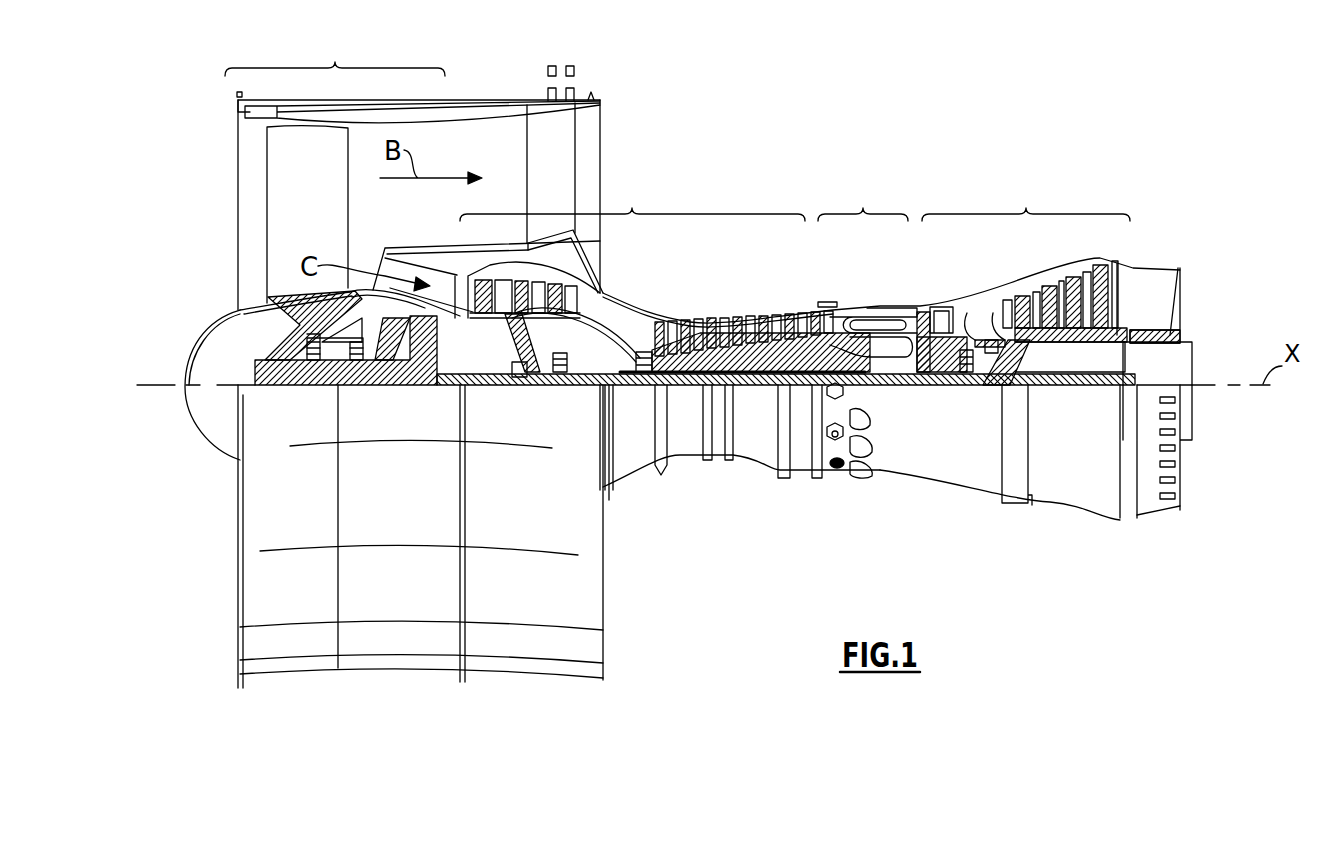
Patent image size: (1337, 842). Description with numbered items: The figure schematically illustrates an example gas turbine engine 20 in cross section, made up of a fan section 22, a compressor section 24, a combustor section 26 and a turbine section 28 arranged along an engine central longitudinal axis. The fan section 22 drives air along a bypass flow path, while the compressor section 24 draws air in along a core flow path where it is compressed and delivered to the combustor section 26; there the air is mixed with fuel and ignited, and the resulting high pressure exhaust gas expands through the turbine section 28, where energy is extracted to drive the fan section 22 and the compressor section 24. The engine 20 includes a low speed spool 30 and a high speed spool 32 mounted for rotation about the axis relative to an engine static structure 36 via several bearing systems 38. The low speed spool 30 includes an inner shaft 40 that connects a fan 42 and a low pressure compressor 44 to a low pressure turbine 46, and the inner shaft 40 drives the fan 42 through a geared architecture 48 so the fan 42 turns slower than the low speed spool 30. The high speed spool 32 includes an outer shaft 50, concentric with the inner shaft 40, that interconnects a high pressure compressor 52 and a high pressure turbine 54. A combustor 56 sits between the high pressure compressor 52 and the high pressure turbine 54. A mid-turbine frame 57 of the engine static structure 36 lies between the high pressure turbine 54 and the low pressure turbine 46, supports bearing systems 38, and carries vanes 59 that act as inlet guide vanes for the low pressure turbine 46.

The gas turbine engine 20 is at (878, 154).
The fan section 22 is at (335, 54).
The compressor section 24 is at (632, 198).
The combustor section 26 is at (863, 198).
The turbine section 28 is at (1026, 198).
The low speed spool 30 is at (757, 402).
The high speed spool 32 is at (802, 337).
The engine static structure 36 is at (800, 486).
The bearing systems 38 is at (318, 372).
The inner shaft 40 is at (620, 390).
The fan 42 is at (320, 229).
The low pressure compressor section 44 is at (537, 292).
The low pressure turbine section 46 is at (1068, 277).
The geared architecture 48 is at (428, 370).
The outer shaft 50 is at (880, 372).
The high pressure compressor section 52 is at (730, 322).
The high pressure turbine section 54 is at (940, 302).
The combustor 56 is at (886, 325).
The mid-turbine frame 57 is at (980, 296).
The vanes 59 is at (1020, 388).